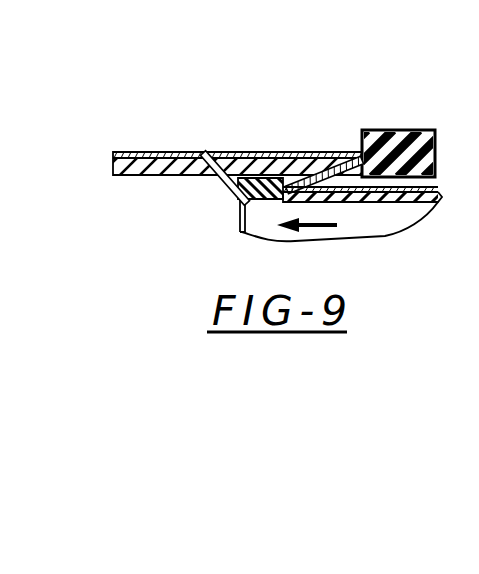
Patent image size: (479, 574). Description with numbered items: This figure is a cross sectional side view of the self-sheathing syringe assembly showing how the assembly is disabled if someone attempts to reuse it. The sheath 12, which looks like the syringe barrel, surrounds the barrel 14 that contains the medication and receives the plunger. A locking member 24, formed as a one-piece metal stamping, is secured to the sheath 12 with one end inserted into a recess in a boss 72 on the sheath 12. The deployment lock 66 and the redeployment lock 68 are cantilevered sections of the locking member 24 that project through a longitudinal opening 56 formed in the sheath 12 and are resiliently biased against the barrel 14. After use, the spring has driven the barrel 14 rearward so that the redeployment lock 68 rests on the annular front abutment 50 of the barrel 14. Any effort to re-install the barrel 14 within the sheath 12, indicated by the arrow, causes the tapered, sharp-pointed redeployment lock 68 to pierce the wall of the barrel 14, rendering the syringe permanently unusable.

The sheath 12 is at (140, 152).
The barrel 14 is at (363, 193).
The locking member 24 is at (246, 142).
The front abutment 50 is at (262, 177).
The longitudinal opening 56 is at (283, 186).
The deployment lock 66 is at (307, 172).
The redeployment lock 68 is at (223, 152).
The boss 72 is at (407, 130).